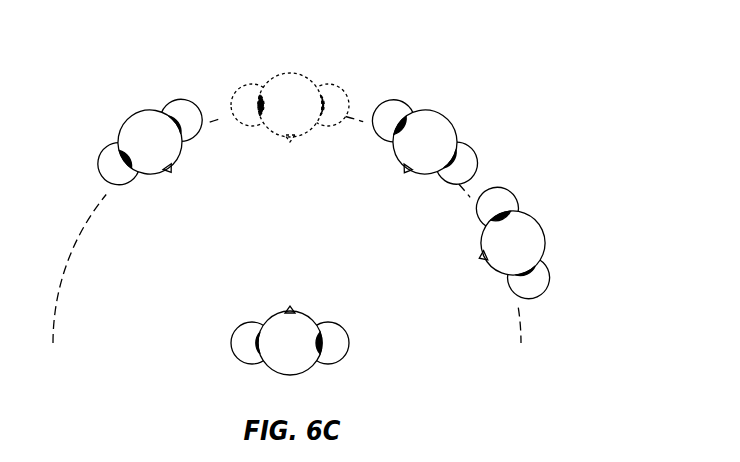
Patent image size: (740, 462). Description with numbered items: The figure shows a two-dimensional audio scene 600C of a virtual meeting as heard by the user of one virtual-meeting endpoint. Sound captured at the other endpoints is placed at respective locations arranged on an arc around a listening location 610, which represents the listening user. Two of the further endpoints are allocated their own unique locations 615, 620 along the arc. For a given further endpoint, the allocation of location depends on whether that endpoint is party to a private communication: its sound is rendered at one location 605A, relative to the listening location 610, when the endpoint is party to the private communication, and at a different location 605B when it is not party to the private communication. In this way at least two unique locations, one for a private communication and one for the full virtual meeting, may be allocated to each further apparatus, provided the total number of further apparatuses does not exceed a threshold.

The two-dimensional audio scene 600C is at (632, 75).
The location 605A is at (226, 76).
The different location 605B is at (550, 210).
The listening location 610 is at (221, 313).
The location 615 is at (89, 133).
The location 620 is at (461, 105).